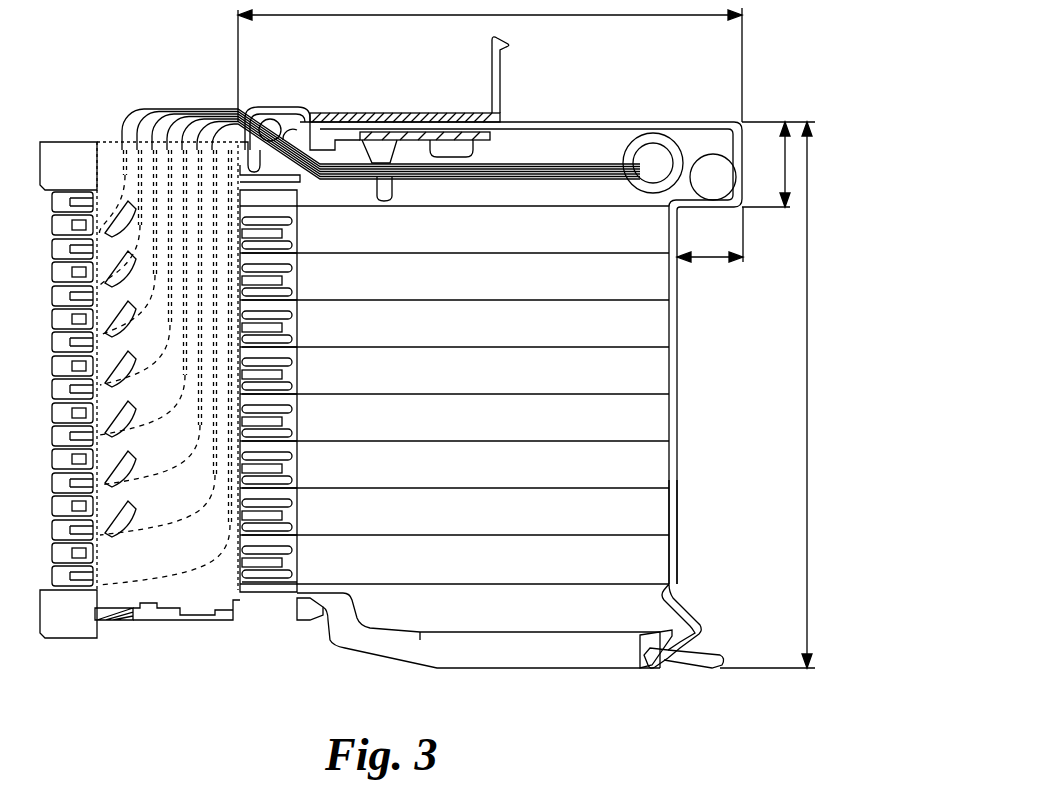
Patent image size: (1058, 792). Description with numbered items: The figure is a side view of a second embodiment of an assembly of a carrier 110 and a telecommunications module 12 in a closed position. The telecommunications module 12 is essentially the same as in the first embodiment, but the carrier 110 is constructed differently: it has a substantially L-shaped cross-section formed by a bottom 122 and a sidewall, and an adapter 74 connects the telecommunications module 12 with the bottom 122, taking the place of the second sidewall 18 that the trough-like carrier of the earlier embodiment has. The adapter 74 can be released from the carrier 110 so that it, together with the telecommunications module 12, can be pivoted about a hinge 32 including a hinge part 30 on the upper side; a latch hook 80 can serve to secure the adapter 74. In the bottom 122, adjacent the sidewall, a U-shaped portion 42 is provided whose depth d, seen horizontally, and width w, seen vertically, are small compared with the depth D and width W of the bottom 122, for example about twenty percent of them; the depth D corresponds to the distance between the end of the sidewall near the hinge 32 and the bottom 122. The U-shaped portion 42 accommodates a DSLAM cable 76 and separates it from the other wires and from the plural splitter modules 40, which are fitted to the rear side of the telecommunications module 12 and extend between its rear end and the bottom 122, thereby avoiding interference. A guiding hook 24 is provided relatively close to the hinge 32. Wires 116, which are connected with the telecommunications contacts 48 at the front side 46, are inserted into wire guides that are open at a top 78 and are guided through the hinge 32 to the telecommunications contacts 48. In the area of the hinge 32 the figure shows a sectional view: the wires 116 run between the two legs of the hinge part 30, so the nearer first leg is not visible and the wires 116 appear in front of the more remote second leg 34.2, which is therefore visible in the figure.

The telecommunications module 12 is at (118, 600).
The sidewall 18 is at (607, 122).
The guiding hook 24 is at (380, 158).
The hinge part 30 is at (290, 122).
The hinge 32 is at (289, 118).
The second leg 34.2 is at (256, 112).
The splitter modules 40 is at (640, 556).
The U-shaped portion 42 is at (662, 136).
The front side 46 is at (40, 320).
The telecommunications contacts 48 is at (52, 522).
The adapter 74 is at (545, 655).
The DSLAM cable 76 is at (713, 158).
The top 78 is at (95, 118).
The latch hook 80 is at (316, 618).
The carrier 110 is at (677, 366).
The wires 116 is at (550, 170).
The bottom 122 is at (677, 515).
The depth D is at (575, 15).
The width W is at (806, 332).
The width of the U-shaped portion w is at (785, 166).
The depth of the U-shaped portion d is at (705, 262).